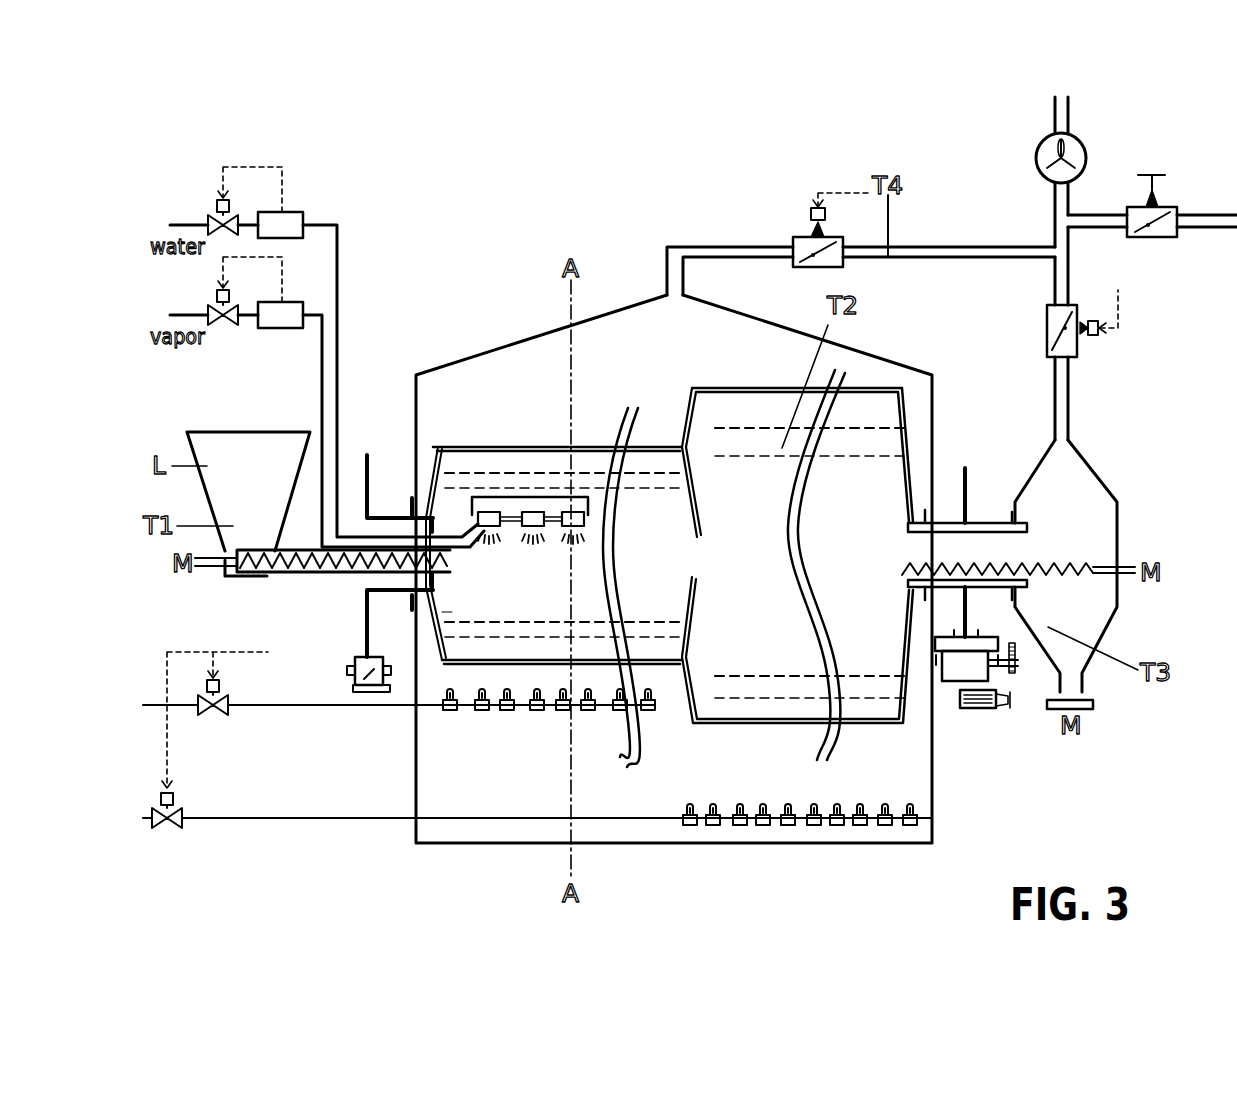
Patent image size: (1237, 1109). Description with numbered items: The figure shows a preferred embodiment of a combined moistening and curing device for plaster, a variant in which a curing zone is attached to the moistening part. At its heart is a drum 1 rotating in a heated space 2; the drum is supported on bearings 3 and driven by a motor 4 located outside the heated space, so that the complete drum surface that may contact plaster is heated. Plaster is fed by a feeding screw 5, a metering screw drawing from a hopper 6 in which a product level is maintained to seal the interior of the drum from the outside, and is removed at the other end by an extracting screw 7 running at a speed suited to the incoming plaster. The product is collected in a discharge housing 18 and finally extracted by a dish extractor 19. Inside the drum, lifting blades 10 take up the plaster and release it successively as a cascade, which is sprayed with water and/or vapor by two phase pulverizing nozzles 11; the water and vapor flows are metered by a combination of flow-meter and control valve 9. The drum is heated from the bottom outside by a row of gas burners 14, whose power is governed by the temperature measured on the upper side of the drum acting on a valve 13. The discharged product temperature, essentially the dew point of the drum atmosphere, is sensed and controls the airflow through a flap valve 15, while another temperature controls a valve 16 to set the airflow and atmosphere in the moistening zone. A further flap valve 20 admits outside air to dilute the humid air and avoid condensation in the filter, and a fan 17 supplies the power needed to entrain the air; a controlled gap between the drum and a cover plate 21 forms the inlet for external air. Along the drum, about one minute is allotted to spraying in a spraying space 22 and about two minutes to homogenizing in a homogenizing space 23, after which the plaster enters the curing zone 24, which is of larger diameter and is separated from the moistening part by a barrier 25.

The drum 1 is at (510, 445).
The heated space 2 is at (617, 362).
The bearings 3 is at (353, 686).
The motor 4 is at (990, 710).
The feeding screw 5 is at (295, 573).
The hopper 6 is at (240, 510).
The extracting screw 7 is at (1093, 567).
The combination of flow-meter and control valve 9 is at (283, 175).
The lifting blades 10 is at (600, 640).
The two phase pulverizing nozzles 11 is at (478, 510).
The valve 13 is at (213, 715).
The gas burners 14 is at (475, 708).
The flap valve 15 is at (1048, 330).
The valve 16 is at (793, 237).
The fan 17 is at (1040, 140).
The discharge housing 18 is at (1083, 540).
The dish extractor 19 is at (1087, 710).
The flap valve 20 is at (1170, 207).
The cover plate 21 is at (415, 590).
The spraying space 22 is at (453, 620).
The homogenizing space 23 is at (647, 623).
The curing zone 24 is at (762, 622).
The barrier 25 is at (683, 640).